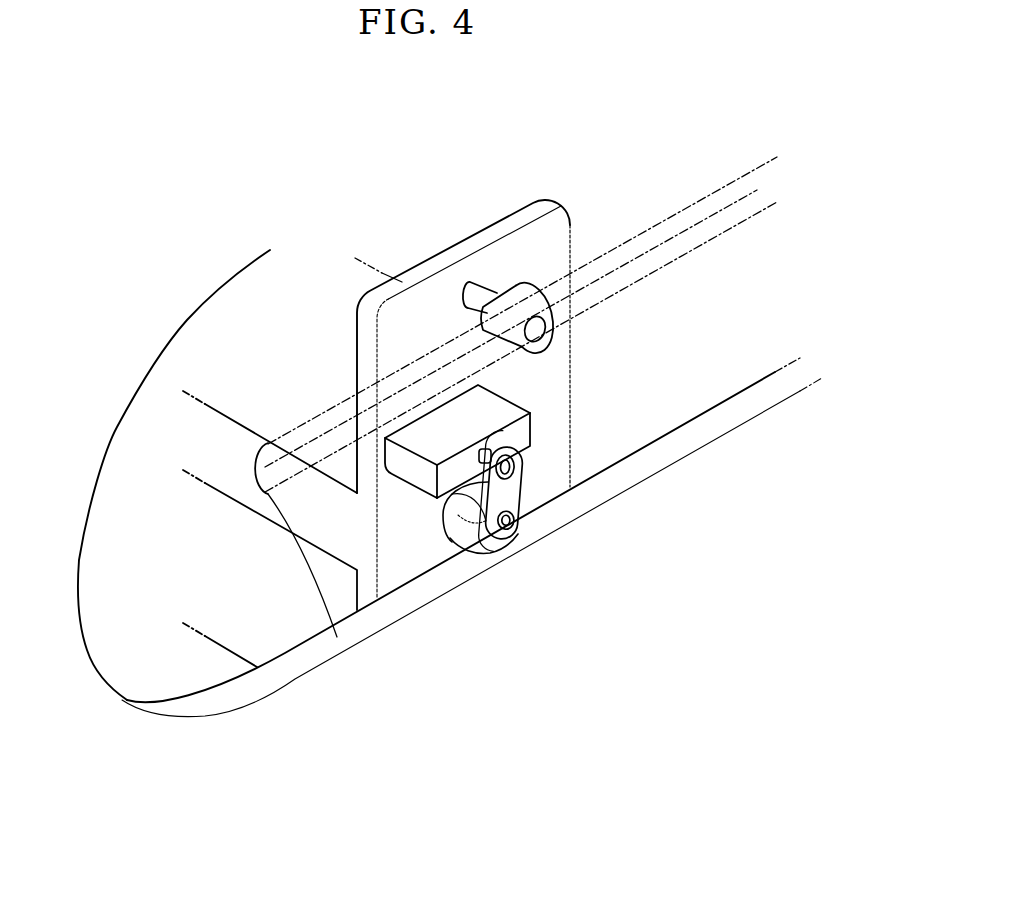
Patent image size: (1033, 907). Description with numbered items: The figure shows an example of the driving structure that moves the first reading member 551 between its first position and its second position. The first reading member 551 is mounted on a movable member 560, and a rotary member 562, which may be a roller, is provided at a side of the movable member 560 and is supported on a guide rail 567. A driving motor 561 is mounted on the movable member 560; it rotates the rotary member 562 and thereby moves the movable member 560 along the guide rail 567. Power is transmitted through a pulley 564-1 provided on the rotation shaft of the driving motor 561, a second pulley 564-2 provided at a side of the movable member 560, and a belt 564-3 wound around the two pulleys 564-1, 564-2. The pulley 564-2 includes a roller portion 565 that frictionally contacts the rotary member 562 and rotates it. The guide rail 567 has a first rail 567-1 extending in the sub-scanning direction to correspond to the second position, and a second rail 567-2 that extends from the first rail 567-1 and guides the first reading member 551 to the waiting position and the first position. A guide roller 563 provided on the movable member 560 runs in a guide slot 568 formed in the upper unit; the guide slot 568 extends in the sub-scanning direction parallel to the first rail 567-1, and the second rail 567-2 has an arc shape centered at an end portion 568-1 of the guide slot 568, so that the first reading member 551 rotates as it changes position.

The first reading member 551 is at (340, 587).
The movable member 560 is at (380, 280).
The driving motor 561 is at (520, 426).
The rotary member 562 is at (498, 548).
The guide roller 563 is at (540, 343).
The pulley 564-1 is at (522, 480).
The pulley 564-2 is at (515, 532).
The belt 564-3 is at (522, 500).
The roller portion 565 is at (462, 516).
The guide rail 567 is at (472, 580).
The first rail 567-1 is at (303, 663).
The second rail 567-2 is at (367, 736).
The guide slot 568 is at (442, 428).
The end portion of the guide slot 568-1 is at (337, 637).